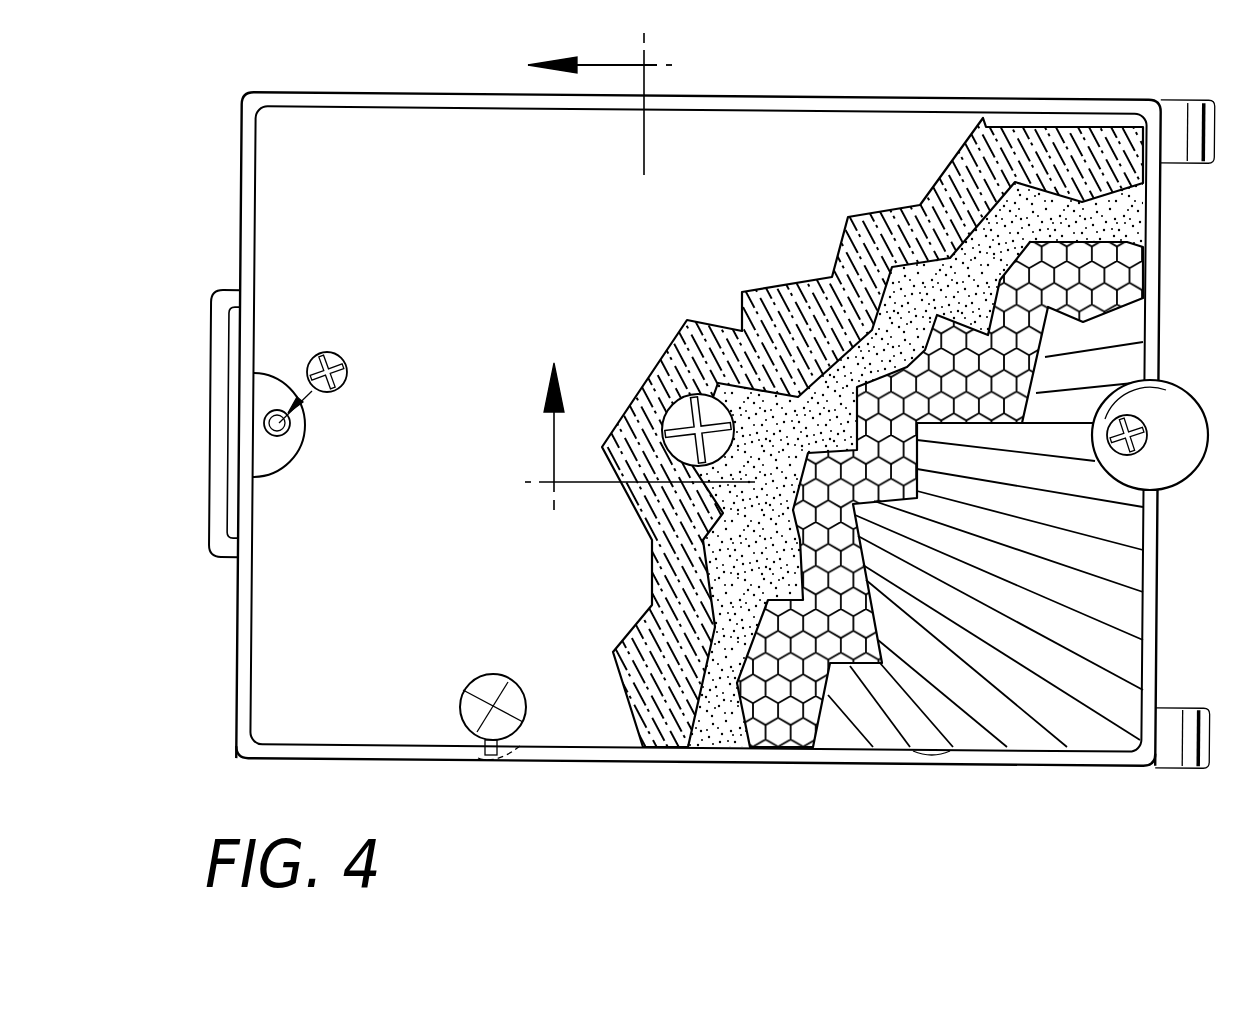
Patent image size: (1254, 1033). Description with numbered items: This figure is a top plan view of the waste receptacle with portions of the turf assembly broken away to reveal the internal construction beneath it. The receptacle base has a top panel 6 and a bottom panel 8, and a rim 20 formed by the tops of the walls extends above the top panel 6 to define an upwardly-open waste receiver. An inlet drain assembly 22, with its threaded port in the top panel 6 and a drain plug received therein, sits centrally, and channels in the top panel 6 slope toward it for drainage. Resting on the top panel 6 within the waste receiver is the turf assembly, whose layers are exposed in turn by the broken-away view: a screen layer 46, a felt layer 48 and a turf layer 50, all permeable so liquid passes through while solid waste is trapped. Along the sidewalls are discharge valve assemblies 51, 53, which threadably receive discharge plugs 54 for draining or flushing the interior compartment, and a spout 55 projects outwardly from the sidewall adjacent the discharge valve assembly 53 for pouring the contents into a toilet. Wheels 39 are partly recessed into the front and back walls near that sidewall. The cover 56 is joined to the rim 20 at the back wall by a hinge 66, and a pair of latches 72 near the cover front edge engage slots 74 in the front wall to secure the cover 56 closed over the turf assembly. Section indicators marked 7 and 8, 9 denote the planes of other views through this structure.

The top panel 6 is at (1050, 763).
The section line 7 is at (614, 93).
The bottom panel 8 is at (622, 448).
The section line 9 is at (622, 448).
The rim 20 is at (1158, 257).
The inlet drain assembly 22 is at (640, 405).
The wheels 39 is at (1222, 712).
The screen layer 46 is at (800, 752).
The felt layer 48 is at (738, 752).
The turf layer 50 is at (677, 752).
The discharge valve assembly 51 is at (304, 448).
The discharge valve assembly 53 is at (1163, 488).
The discharge plugs 54 is at (348, 376).
The spout 55 is at (1197, 398).
The cover 56 is at (483, 277).
The hinge 66 is at (1033, 105).
The latches 72 is at (493, 674).
The slots 74 is at (466, 748).